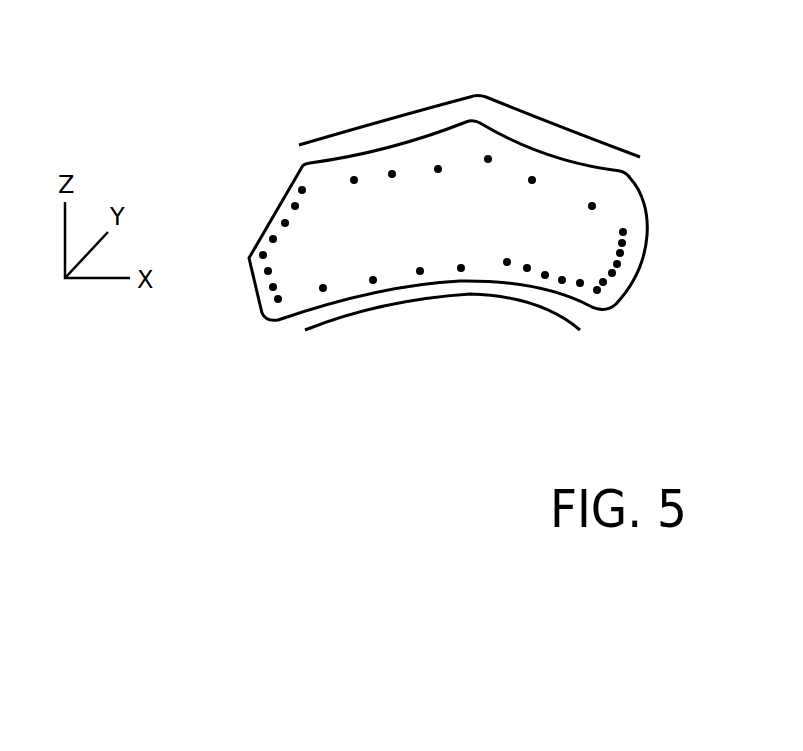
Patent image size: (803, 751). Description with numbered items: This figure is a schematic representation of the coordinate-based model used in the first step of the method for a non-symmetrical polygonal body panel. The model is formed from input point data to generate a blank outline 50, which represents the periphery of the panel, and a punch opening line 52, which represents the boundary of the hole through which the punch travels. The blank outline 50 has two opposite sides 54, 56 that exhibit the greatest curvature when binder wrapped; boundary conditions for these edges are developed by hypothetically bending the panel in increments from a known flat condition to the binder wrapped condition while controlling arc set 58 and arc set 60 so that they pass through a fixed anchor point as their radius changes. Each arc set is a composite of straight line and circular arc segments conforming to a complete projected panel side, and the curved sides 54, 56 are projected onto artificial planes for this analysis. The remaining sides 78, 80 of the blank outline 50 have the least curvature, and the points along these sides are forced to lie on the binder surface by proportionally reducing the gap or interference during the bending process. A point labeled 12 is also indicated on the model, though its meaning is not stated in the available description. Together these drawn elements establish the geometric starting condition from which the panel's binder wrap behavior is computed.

The measurement point 12 is at (589, 287).
The blank outline 50 is at (620, 302).
The punch opening line 52 is at (592, 206).
The side of blank outline having the greatest curvature 54 is at (418, 168).
The side of blank outline having the greatest curvature 56 is at (349, 283).
The arc set 58 is at (383, 120).
The arc set 60 is at (435, 297).
The side of blank outline having the least curvature 78 is at (617, 263).
The side of blank outline having the least curvature 80 is at (273, 238).